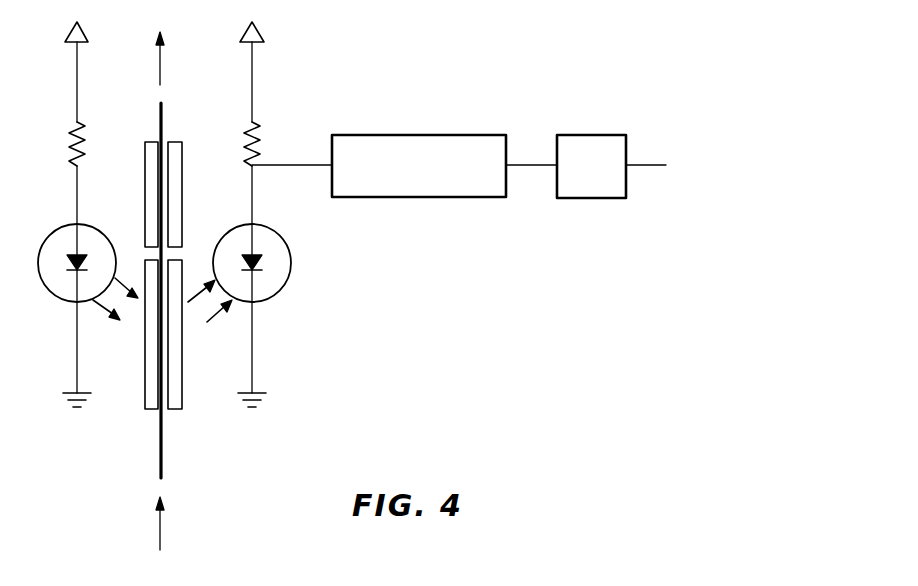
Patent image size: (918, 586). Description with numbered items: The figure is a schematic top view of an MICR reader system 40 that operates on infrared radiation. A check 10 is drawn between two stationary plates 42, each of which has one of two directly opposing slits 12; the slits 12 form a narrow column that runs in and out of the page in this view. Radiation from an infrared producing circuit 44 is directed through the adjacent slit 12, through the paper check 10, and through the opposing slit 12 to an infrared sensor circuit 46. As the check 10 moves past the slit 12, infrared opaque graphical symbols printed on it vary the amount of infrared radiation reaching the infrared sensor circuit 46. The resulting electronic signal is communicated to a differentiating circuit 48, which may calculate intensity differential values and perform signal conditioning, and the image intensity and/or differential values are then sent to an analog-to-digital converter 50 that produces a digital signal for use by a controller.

The MICR reader system 40 is at (489, 68).
The check 10 is at (163, 125).
The slits 12 is at (148, 252).
The stationary plates 42 is at (145, 392).
The infrared producing circuit 44 is at (77, 197).
The infrared sensor circuit 46 is at (253, 350).
The differentiating circuit 48 is at (405, 135).
The analog-to-digital converter 50 is at (590, 135).